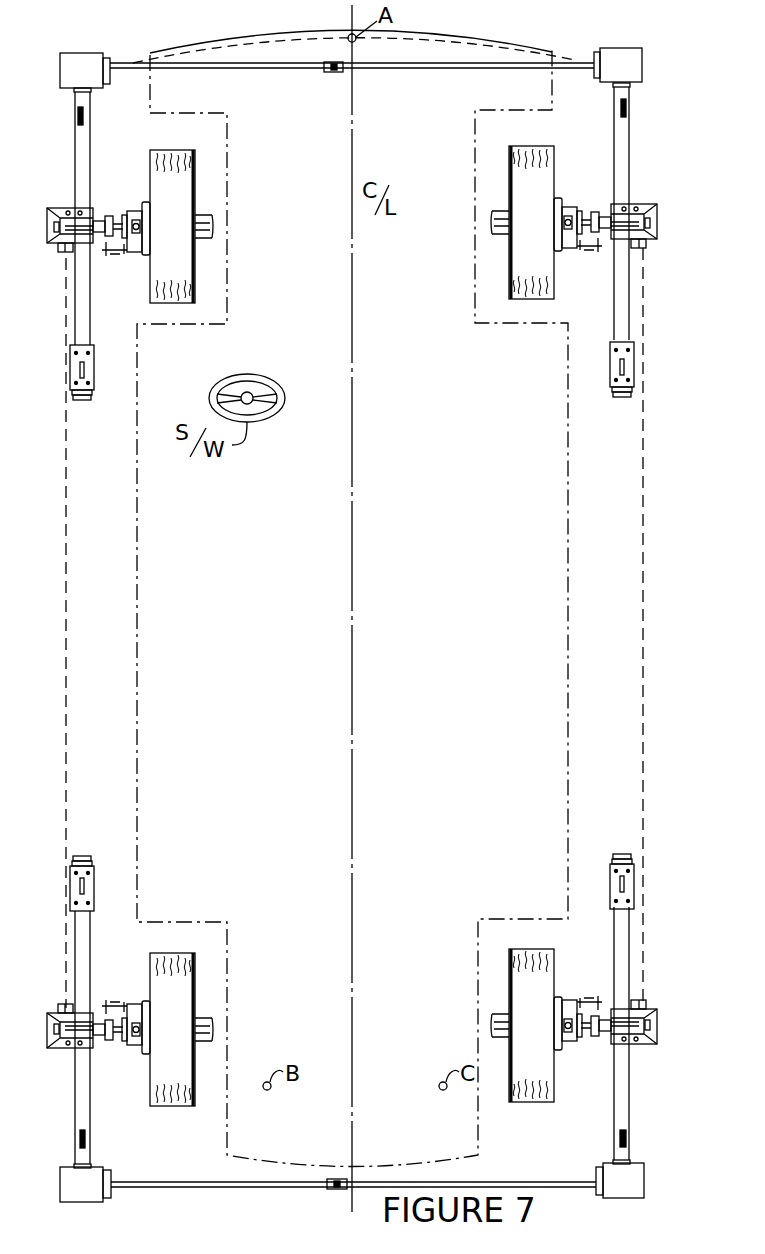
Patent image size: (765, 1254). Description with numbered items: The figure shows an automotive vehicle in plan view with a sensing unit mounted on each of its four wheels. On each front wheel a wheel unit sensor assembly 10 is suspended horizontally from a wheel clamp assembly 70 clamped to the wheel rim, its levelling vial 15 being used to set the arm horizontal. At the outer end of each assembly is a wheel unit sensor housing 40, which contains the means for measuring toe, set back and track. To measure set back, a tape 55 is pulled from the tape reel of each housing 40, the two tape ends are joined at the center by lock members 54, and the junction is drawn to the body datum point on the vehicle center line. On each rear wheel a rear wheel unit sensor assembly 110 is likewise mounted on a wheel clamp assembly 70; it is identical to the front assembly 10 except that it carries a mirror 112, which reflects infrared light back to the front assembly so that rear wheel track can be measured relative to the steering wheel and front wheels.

The wheel unit sensor assembly 10 is at (42, 228).
The levelling vial 15 is at (78, 115).
The wheel unit sensor housing 40 is at (80, 53).
The lock members 54 is at (332, 72).
The tape 55 is at (452, 46).
The wheel clamp assembly 70 is at (132, 204).
The rear wheel unit sensor assembly 110 is at (62, 1056).
The mirror 112 is at (65, 1008).